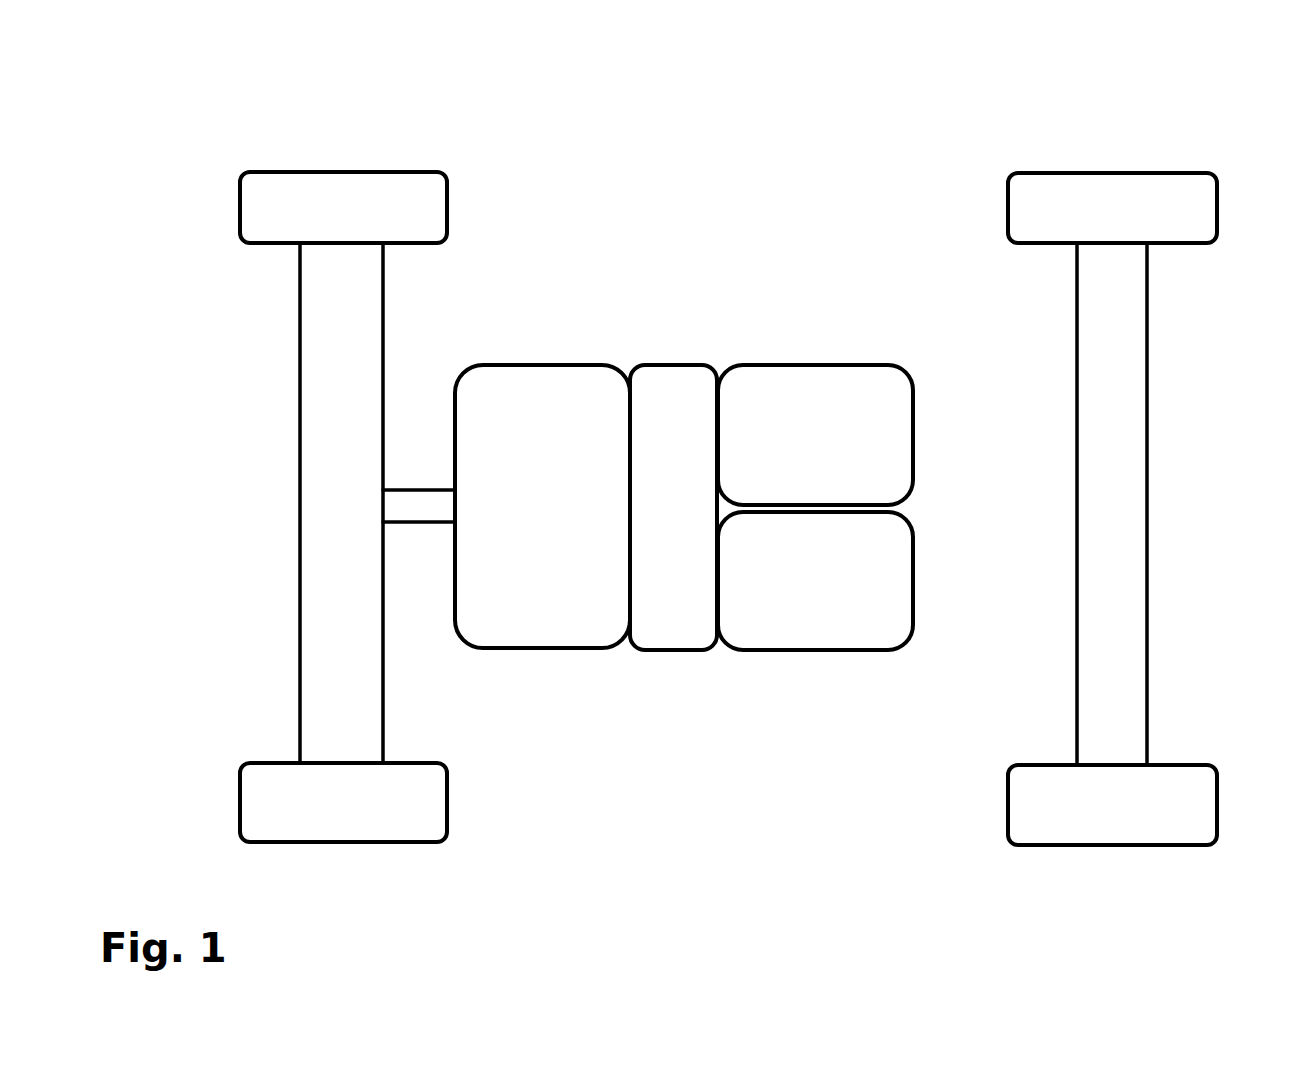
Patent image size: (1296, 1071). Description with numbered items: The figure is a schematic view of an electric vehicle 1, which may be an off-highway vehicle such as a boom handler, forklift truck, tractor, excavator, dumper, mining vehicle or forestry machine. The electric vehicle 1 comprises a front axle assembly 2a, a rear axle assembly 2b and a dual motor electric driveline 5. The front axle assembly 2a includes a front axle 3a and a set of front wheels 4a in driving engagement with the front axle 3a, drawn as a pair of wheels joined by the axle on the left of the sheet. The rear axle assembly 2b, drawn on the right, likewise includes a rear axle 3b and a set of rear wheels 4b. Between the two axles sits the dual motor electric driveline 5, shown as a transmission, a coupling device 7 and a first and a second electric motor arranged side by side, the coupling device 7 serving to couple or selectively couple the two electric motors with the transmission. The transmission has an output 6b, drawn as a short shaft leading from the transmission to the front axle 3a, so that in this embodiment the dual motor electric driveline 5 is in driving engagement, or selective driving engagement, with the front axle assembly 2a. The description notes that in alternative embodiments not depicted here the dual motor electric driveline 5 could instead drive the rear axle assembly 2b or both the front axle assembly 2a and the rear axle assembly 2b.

The electric vehicle 1 is at (202, 92).
The front axle assembly 2a is at (387, 878).
The rear axle assembly 2b is at (1178, 875).
The front axle 3a is at (298, 425).
The rear axle 3b is at (1077, 465).
The front wheels 4a is at (240, 203).
The rear wheels 4b is at (1008, 203).
The dual motor electric driveline 5 is at (673, 723).
The output 6b is at (403, 528).
The coupling device 7 is at (685, 535).